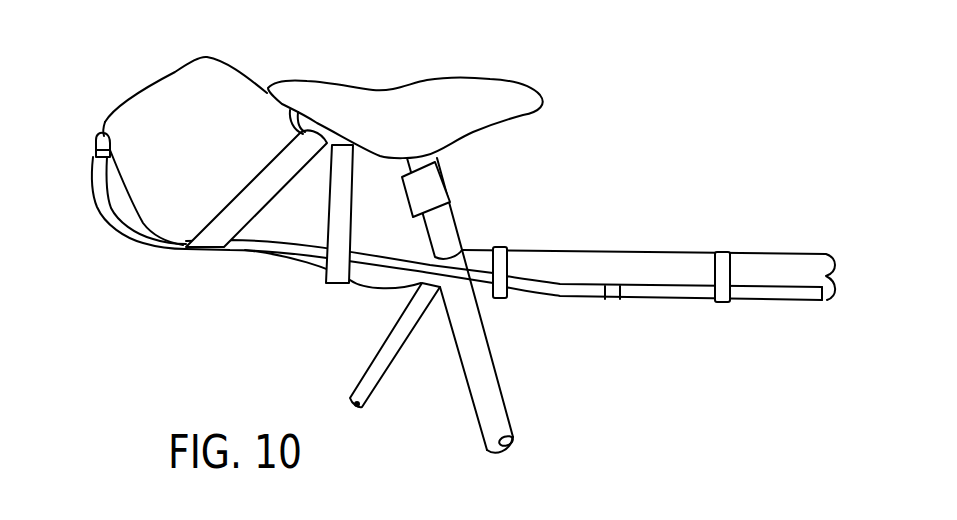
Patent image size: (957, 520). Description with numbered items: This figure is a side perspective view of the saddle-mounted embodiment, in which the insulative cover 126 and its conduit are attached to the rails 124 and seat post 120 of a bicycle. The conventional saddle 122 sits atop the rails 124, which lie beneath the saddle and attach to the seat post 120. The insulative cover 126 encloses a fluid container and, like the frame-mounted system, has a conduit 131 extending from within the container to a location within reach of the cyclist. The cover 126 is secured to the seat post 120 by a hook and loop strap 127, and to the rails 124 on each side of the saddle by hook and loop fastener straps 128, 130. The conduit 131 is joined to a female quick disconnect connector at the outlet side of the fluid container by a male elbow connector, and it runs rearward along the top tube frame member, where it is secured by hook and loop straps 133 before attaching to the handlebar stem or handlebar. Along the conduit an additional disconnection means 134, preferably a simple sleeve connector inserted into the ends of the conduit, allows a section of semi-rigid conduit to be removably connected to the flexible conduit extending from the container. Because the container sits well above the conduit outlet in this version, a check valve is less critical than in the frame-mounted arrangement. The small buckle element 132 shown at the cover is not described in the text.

The seat post 120 is at (451, 224).
The saddle 122 is at (400, 96).
The rails 124 is at (290, 118).
The insulative cover 126 is at (198, 167).
The hook and loop strap 127 is at (433, 187).
The hook and loop fastener strap 128 is at (199, 250).
The hook and loop fastener strap 130 is at (337, 284).
The conduit 131 is at (101, 229).
The buckle 132 is at (95, 140).
The hook and loop straps 133 is at (502, 300).
The disconnection means 134 is at (612, 300).